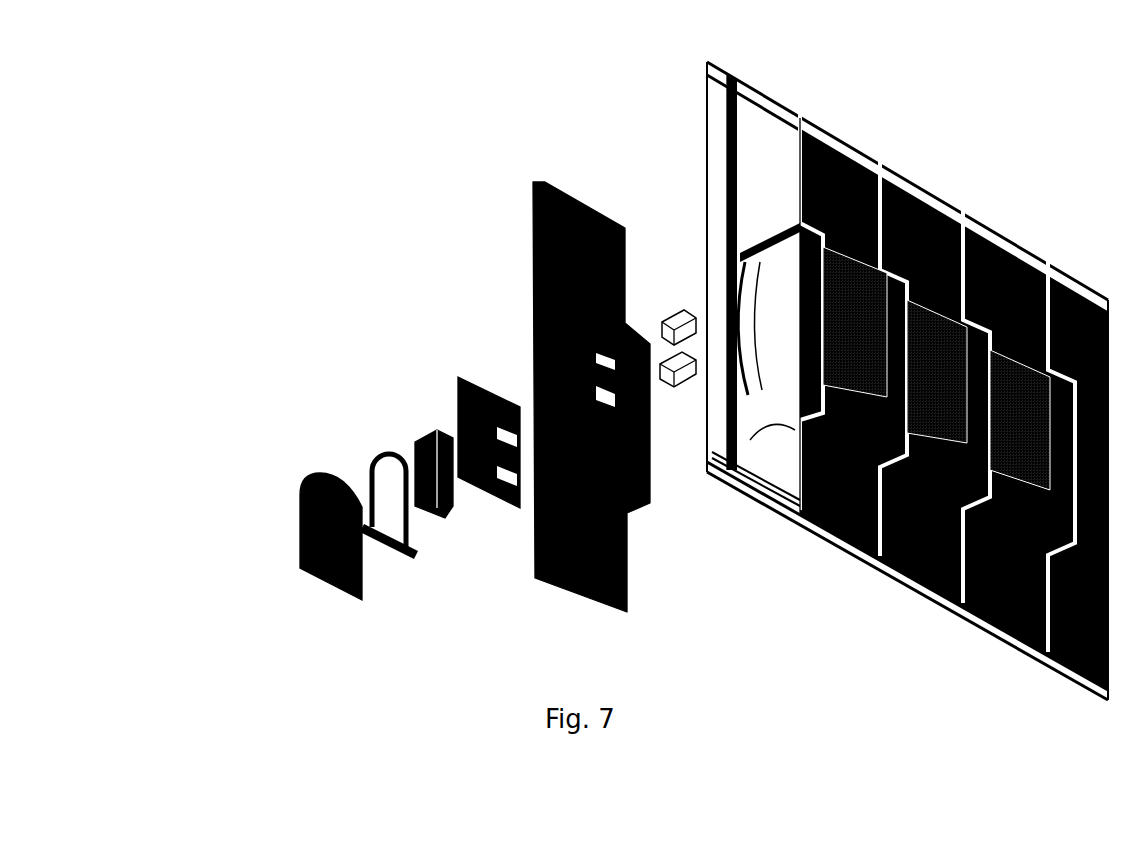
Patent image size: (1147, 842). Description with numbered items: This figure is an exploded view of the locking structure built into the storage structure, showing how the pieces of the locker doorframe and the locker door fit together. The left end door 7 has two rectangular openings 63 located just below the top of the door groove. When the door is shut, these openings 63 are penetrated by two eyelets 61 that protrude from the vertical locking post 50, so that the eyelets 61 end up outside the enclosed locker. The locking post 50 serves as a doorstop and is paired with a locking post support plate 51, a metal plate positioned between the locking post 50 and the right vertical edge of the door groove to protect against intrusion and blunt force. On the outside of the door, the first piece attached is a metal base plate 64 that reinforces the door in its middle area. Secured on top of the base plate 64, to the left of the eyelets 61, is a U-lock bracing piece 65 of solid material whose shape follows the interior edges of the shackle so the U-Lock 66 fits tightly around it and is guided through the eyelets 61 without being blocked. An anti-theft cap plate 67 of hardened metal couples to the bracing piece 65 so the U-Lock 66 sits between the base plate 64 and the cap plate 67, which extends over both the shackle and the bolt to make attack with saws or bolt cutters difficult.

The locking post 50 is at (707, 117).
The locking post support plate 51 is at (707, 183).
The left end door 7 is at (553, 280).
The eyelets 61 is at (657, 316).
The rectangular openings 63 is at (612, 362).
The metal base plate 64 is at (460, 387).
The U-lock bracing piece 65 is at (413, 425).
The U-Lock 66 is at (357, 467).
The anti-theft cap plate 67 is at (291, 515).